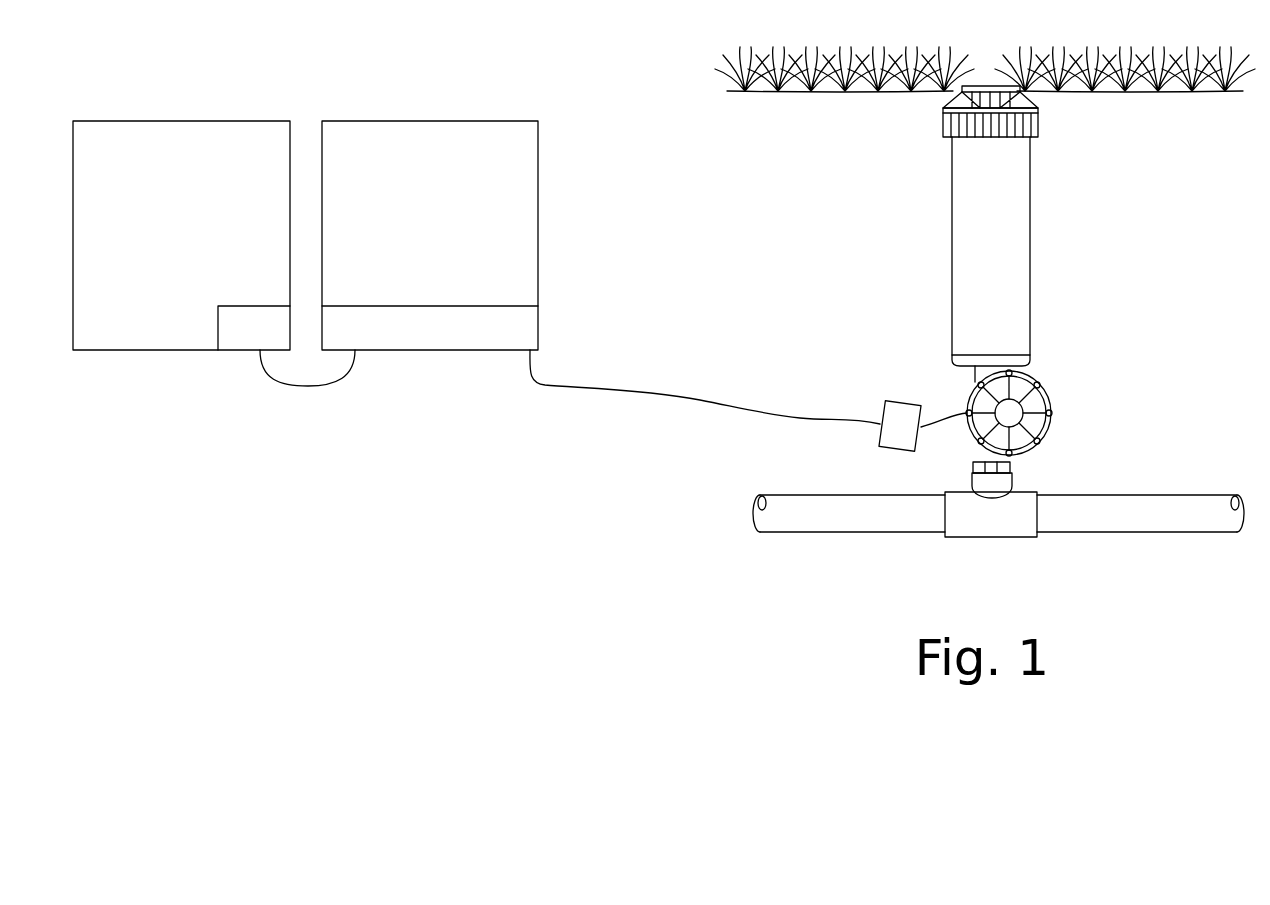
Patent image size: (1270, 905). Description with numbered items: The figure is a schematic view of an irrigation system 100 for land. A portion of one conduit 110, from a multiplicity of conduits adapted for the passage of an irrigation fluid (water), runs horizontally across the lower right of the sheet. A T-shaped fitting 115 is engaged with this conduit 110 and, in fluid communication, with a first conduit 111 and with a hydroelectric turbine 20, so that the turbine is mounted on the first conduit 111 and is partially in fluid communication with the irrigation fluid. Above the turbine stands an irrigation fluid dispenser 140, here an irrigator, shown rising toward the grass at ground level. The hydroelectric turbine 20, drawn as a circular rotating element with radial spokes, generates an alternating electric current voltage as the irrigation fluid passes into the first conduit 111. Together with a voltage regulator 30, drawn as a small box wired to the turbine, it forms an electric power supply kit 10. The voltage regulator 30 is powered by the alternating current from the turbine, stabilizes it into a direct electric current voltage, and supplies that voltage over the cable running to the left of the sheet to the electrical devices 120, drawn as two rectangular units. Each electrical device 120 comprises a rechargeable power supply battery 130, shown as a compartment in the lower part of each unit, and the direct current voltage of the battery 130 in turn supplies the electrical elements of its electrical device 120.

The electric power supply kit 10 is at (1043, 406).
The hydroelectric turbine 20 is at (1037, 425).
The voltage regulator 30 is at (900, 413).
The irrigation system 100 is at (1178, 528).
The conduit 110 is at (825, 518).
The first conduit 111 is at (986, 458).
The T-shaped fitting 115 is at (995, 518).
The electrical device 120 is at (163, 152).
The rechargeable power supply battery 130 is at (250, 329).
The irrigation fluid dispenser 140 is at (1008, 214).